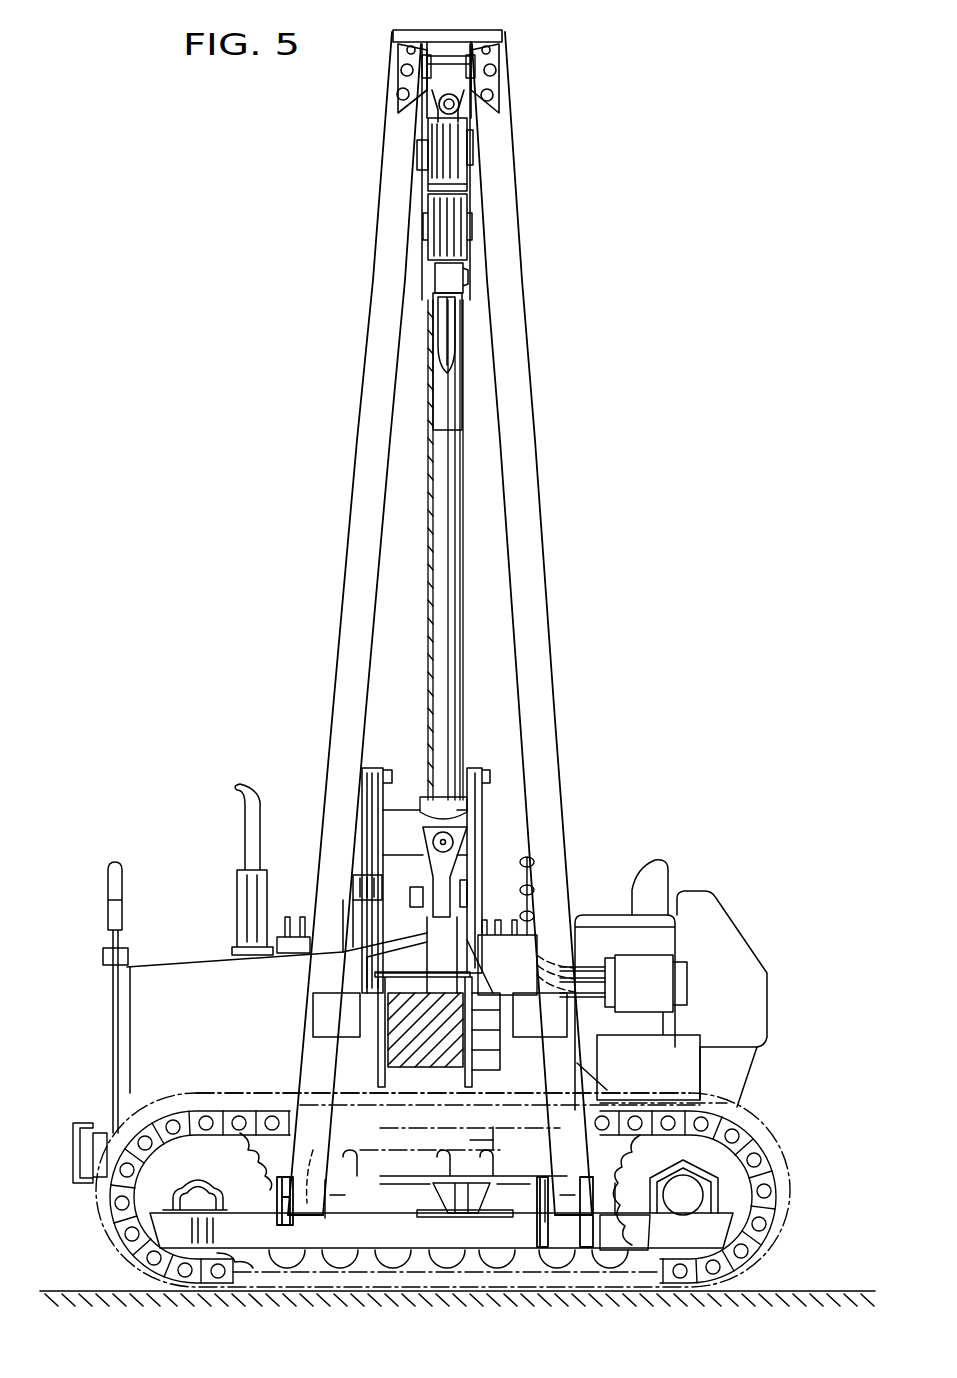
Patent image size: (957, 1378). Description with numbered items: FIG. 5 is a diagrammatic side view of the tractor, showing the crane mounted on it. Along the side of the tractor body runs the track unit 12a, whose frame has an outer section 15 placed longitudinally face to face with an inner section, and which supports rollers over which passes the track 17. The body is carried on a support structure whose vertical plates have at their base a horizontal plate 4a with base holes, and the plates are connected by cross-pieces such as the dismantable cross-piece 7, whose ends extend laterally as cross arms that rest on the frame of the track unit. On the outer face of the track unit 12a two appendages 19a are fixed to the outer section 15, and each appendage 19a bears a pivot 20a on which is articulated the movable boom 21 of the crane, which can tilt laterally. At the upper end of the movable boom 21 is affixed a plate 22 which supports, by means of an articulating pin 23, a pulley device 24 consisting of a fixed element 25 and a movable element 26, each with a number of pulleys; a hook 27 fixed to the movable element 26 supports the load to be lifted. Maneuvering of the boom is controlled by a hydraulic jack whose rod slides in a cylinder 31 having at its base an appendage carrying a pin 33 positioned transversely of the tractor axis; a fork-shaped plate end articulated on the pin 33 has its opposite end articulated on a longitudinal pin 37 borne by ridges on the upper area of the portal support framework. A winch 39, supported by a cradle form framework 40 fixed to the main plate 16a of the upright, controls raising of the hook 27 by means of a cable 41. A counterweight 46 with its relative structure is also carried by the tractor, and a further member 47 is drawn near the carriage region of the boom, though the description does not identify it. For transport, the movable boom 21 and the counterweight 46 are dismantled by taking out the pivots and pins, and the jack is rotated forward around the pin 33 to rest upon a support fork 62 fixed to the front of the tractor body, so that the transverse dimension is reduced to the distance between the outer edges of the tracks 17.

The horizontal plate 4a is at (378, 1162).
The dismantable cross-piece 7 is at (452, 1195).
The track unit 12a is at (201, 1095).
The outer section 15 is at (240, 1227).
The main plate 16a is at (478, 1143).
The track 17 is at (122, 1218).
The appendage 19a is at (293, 1237).
The pivot 20a is at (318, 1180).
The movable boom 21 is at (352, 622).
The plate 22 is at (478, 48).
The articulating pin 23 is at (494, 72).
The pulley device 24 is at (443, 237).
The fixed element 25 is at (428, 150).
The movable element 26 is at (435, 244).
The hook 27 is at (450, 345).
The cylinder 31 is at (446, 526).
The pin 33 is at (455, 843).
The pin 37 is at (412, 895).
The winch 39 is at (384, 1150).
The cradle form framework 40 is at (372, 992).
The cable 41 is at (428, 592).
The counterweight 46 is at (300, 930).
The carriage 47 is at (400, 800).
The support fork 62 is at (124, 918).